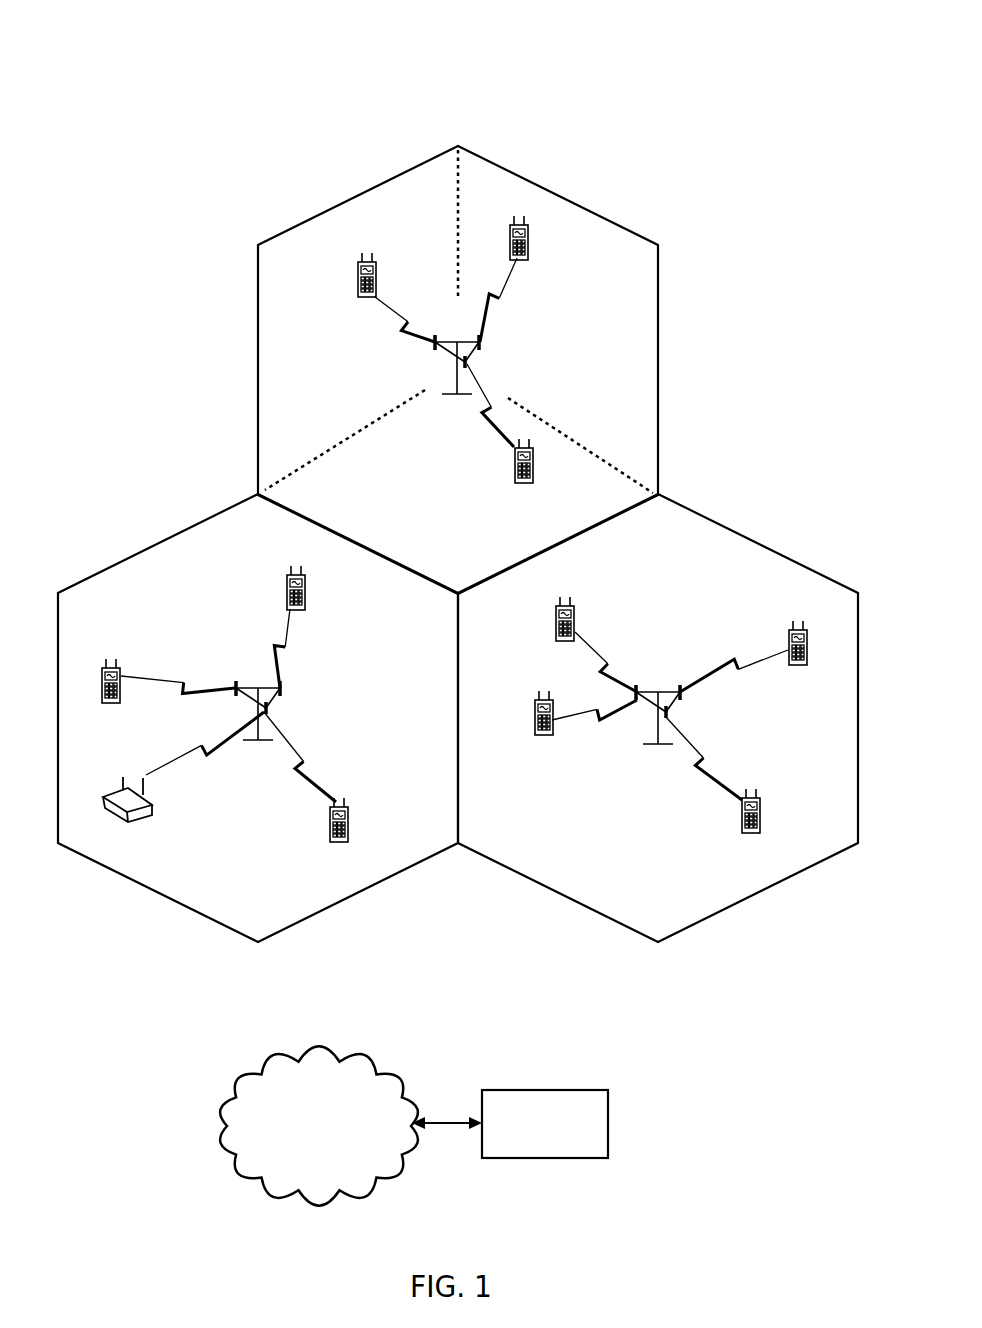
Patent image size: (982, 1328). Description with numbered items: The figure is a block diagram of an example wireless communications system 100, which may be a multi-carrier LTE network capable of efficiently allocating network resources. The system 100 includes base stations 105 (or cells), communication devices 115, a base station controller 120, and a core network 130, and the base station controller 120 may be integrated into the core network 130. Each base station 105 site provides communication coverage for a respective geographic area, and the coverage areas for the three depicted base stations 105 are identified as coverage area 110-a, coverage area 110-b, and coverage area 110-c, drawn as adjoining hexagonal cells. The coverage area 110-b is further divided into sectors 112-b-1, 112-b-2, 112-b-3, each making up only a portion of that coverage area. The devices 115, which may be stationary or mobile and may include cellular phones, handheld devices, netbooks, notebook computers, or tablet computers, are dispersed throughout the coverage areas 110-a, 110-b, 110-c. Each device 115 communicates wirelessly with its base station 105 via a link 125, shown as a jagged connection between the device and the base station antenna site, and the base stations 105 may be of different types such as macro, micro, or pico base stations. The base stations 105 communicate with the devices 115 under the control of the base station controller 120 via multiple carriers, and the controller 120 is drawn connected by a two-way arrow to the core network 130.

The wireless communications system 100 is at (768, 60).
The base station 105 is at (449, 340).
The coverage area 110-a is at (158, 544).
The coverage area 110-b is at (557, 194).
The coverage area 110-c is at (771, 548).
The sector 112-b-1 is at (630, 378).
The sector 112-b-2 is at (440, 513).
The sector 112-b-3 is at (346, 378).
The communication device 115 is at (528, 238).
The base station controller 120 is at (563, 1150).
The link 125 is at (502, 310).
The core network 130 is at (335, 1150).